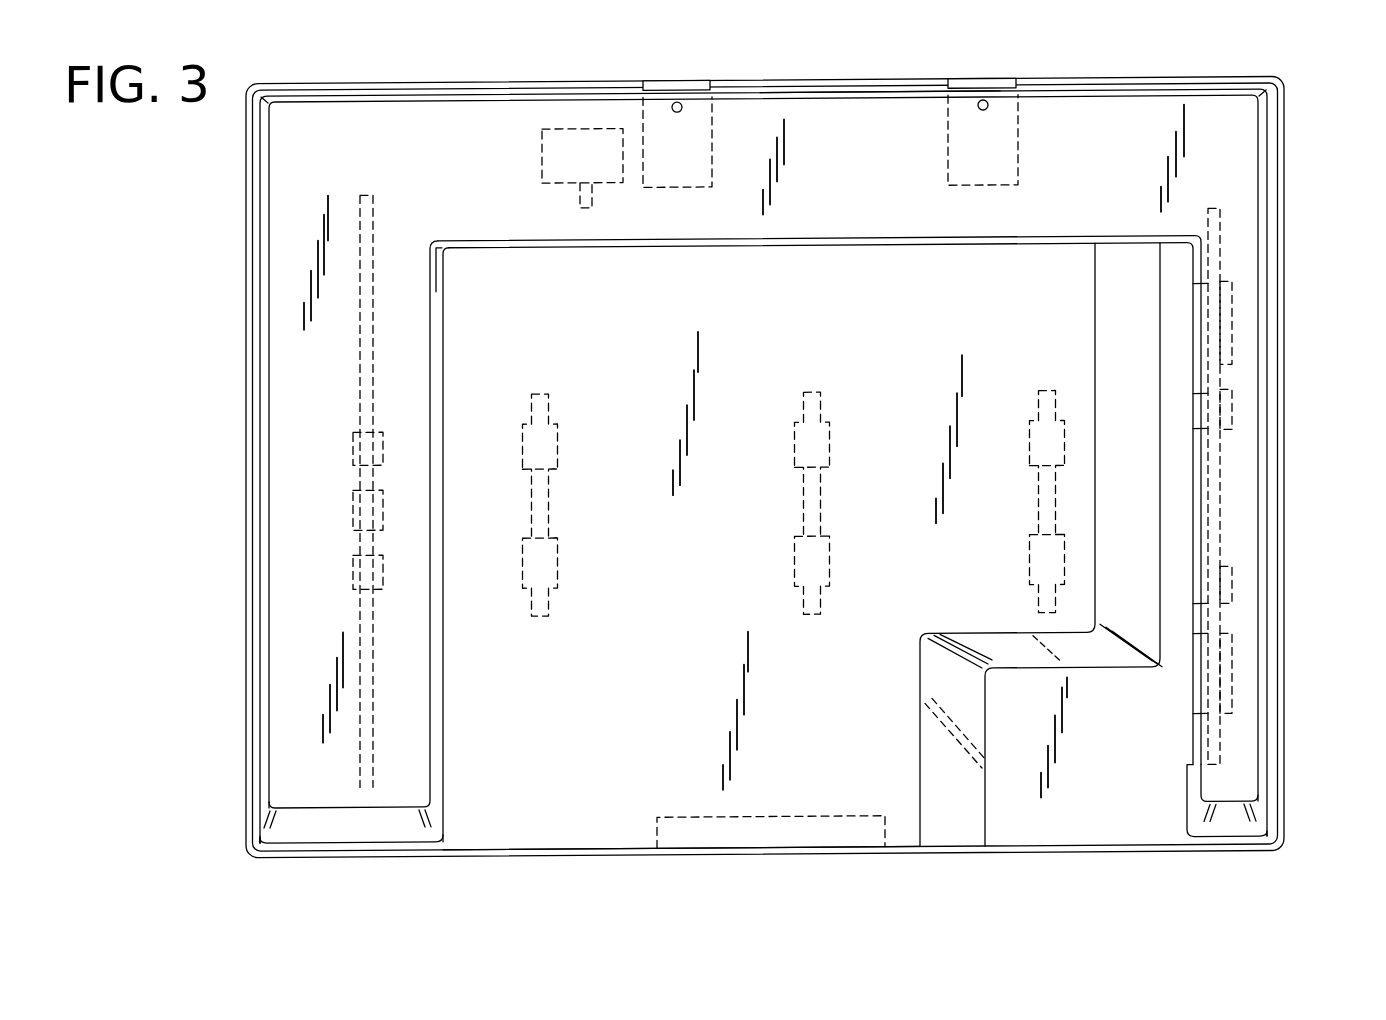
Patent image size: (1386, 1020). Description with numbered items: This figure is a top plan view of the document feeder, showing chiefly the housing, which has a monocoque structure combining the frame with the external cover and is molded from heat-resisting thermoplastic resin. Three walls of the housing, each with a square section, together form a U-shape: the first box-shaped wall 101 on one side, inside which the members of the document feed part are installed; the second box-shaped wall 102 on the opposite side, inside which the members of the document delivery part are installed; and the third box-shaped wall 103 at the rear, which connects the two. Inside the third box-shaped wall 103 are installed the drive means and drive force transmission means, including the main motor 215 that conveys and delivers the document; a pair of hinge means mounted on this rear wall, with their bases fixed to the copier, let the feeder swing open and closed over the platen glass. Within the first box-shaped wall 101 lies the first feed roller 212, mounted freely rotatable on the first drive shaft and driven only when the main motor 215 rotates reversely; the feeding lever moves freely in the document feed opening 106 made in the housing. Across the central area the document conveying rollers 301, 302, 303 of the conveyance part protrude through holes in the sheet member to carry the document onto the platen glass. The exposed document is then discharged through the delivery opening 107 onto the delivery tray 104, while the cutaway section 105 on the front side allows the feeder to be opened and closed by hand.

The first box-shaped wall 101 is at (293, 336).
The second box-shaped wall 102 is at (1247, 323).
The third box-shaped wall 103 is at (862, 130).
The delivery tray 104 is at (577, 800).
The cutaway section 105 is at (771, 830).
The document feed opening 106 is at (444, 717).
The delivery opening 107 is at (1193, 683).
The main motor 215 is at (597, 142).
The first feed roller 212 is at (353, 513).
The document conveying roller 301 is at (558, 568).
The document conveying roller 302 is at (794, 568).
The document conveying roller 303 is at (1029, 568).